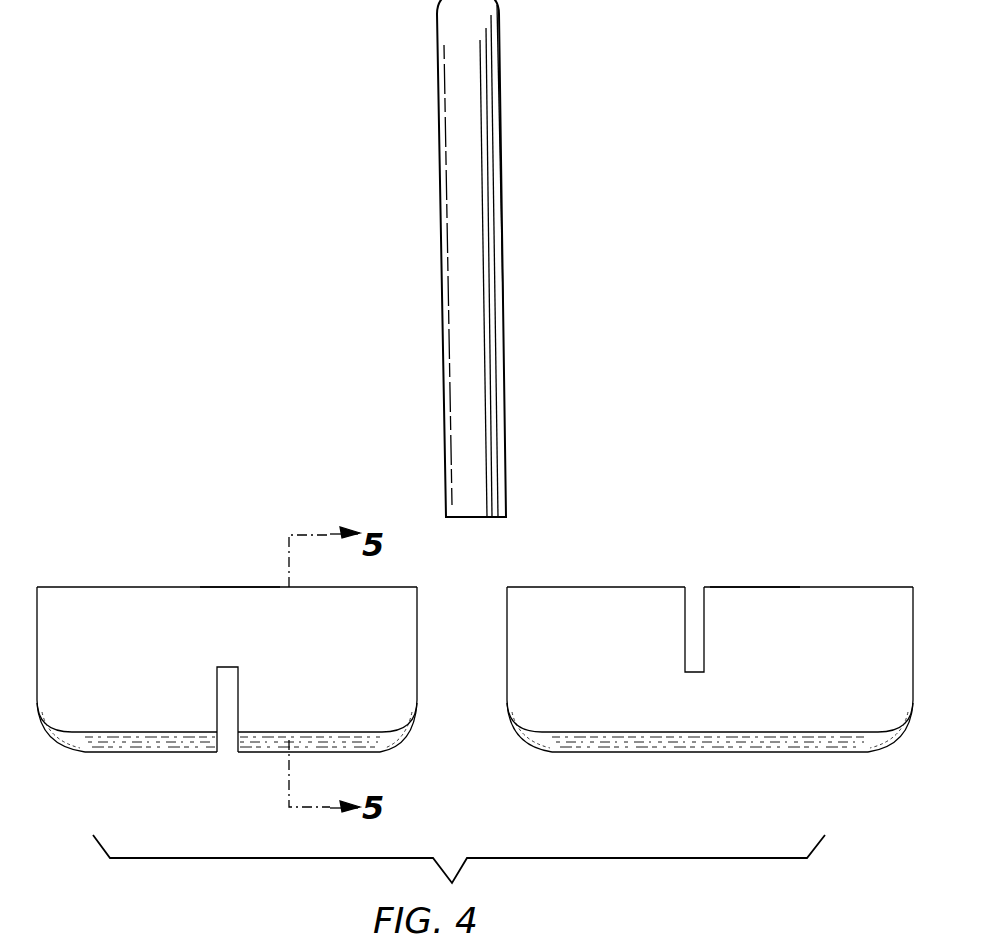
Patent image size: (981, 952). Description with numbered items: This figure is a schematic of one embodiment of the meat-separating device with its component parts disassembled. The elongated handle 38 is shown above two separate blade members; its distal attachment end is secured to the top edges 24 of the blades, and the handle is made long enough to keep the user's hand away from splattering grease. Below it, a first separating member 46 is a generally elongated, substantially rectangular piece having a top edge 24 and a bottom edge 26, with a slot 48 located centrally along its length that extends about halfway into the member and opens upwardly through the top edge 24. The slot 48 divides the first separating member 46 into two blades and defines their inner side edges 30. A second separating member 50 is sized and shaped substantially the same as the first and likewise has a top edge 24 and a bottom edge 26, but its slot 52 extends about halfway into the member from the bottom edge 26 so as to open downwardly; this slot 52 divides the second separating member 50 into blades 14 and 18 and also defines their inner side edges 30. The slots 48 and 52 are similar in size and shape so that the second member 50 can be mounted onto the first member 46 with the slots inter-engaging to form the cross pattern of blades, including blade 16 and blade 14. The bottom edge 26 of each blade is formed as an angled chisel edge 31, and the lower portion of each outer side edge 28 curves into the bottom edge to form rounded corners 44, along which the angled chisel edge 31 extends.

The separating blade 14 is at (303, 658).
The separating blade 16 is at (772, 710).
The separating blade 18 is at (378, 612).
The top edge 24 is at (157, 587).
The bottom edge 26 is at (115, 752).
The side edge 28 is at (37, 666).
The inner side edge 30 is at (461, 618).
The angled chisel edge 31 is at (195, 742).
The elongated handle 38 is at (505, 213).
The rounded corner 44 is at (52, 738).
The first separating member 46 is at (755, 587).
The slot 48 is at (697, 575).
The second separating member 50 is at (213, 606).
The slot 52 is at (220, 692).